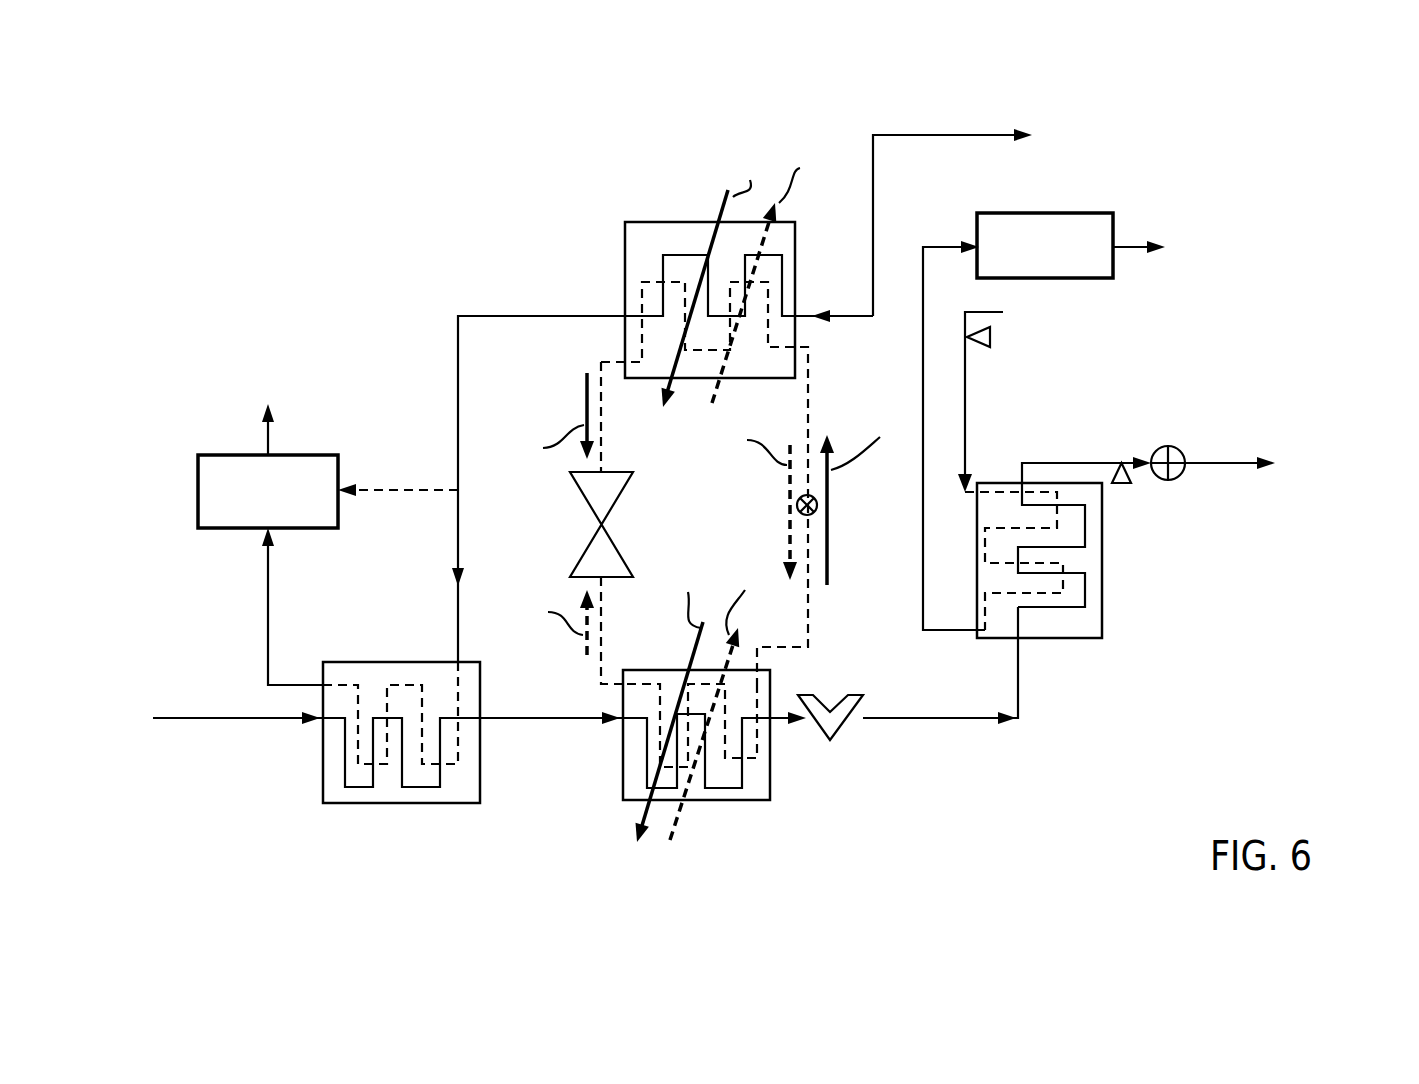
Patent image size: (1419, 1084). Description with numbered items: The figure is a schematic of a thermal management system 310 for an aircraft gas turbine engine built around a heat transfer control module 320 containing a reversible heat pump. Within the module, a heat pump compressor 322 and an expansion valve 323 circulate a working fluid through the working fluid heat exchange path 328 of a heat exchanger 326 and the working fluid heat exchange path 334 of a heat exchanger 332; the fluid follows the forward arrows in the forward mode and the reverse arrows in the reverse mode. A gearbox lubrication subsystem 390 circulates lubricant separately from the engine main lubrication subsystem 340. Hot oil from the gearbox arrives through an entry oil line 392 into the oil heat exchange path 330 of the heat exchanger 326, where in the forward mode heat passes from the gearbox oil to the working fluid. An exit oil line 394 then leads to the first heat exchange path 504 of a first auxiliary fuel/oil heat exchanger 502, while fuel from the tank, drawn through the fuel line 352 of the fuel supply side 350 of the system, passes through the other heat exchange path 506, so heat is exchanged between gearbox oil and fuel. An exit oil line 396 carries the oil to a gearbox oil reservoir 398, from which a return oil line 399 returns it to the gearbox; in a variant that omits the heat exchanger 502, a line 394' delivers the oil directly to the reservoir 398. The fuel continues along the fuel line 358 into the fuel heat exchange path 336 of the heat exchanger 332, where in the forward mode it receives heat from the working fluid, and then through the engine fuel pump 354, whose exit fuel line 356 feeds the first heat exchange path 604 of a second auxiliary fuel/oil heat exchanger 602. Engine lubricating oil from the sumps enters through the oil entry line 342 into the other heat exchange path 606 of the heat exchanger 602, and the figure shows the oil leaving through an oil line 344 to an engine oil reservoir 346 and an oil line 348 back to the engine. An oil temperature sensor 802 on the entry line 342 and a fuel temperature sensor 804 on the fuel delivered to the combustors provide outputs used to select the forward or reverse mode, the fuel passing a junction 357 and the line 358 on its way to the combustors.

The thermal management system 310 is at (464, 172).
The gearbox lubrication subsystem 390 is at (484, 298).
The exit oil line 394 is at (494, 489).
The line 394' is at (398, 522).
The entry oil line 392 is at (920, 134).
The gearbox oil reservoir 398 is at (197, 480).
The return oil line 399 is at (271, 438).
The exit oil line 396 is at (266, 598).
The heat exchanger 326 is at (650, 228).
The heat exchange path 330 is at (660, 268).
The working fluid heat exchange path 328 is at (640, 293).
The heat transfer control module 320 is at (554, 390).
The heat pump compressor 322 is at (614, 490).
The expansion valve 323 is at (816, 509).
The heat exchanger 332 is at (771, 797).
The heat exchange path 336 is at (622, 757).
The working fluid heat exchange path 334 is at (771, 678).
The engine fuel pump 354 is at (841, 735).
The exit fuel line 356 is at (990, 722).
The second auxiliary fuel/oil heat exchanger 602 is at (1082, 632).
The first heat exchange path 604 is at (1087, 590).
The heat exchange path 606 is at (1065, 560).
The mixer 357 is at (1160, 445).
The fuel line 358 is at (522, 716).
The fuel temperature sensor 804 is at (1122, 487).
The engine main lubrication subsystem 340 is at (1102, 306).
The oil entry line 342 is at (966, 405).
The oil temperature sensor 802 is at (986, 348).
The engine oil return line 344 is at (922, 333).
The engine oil reservoir 346 is at (976, 220).
The oil line to engine 348 is at (1135, 245).
The fuel supply subsystem 350 is at (228, 688).
The fuel line from tank 352 is at (185, 720).
The first auxiliary fuel/oil heat exchanger 502 is at (383, 660).
The heat exchange path 506 is at (344, 775).
The first heat exchange path 504 is at (448, 762).